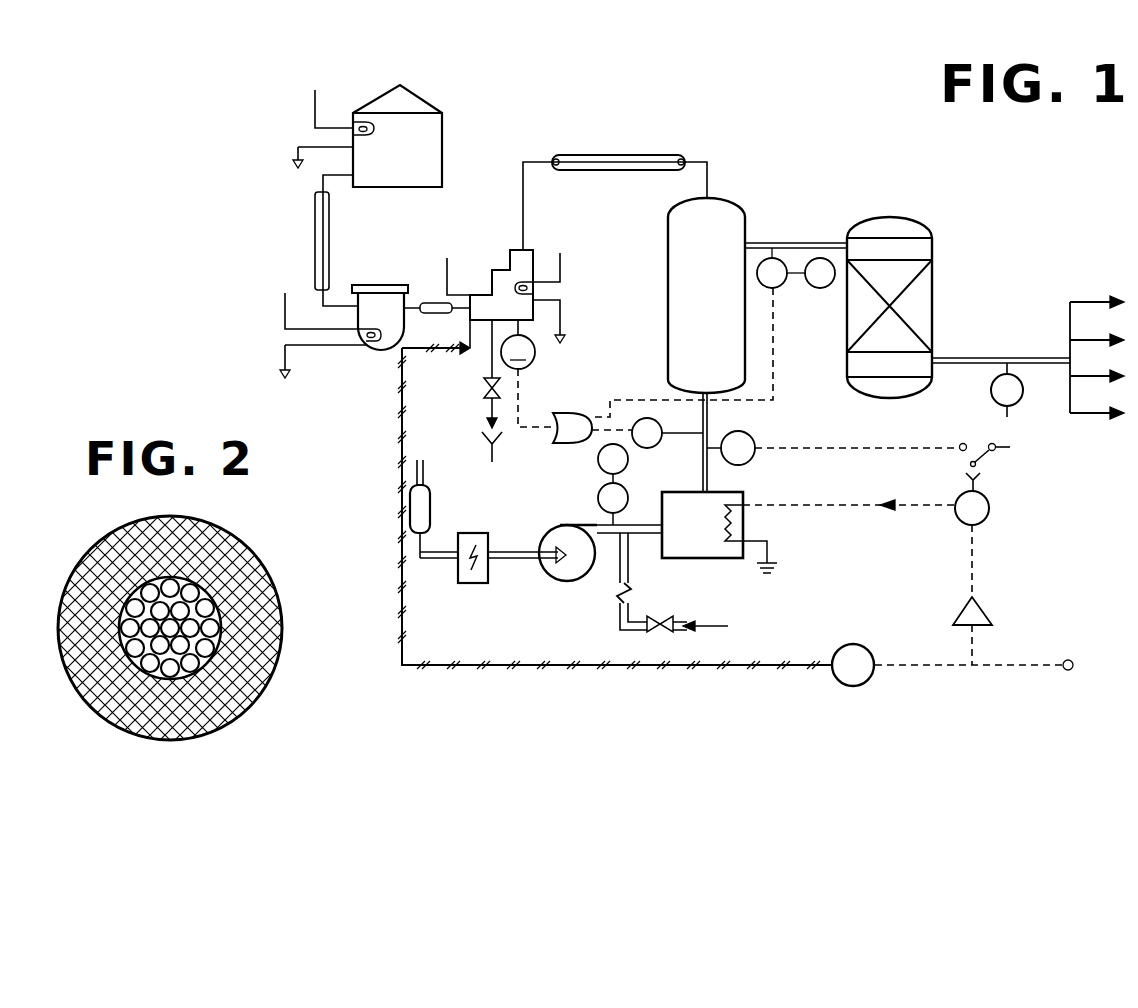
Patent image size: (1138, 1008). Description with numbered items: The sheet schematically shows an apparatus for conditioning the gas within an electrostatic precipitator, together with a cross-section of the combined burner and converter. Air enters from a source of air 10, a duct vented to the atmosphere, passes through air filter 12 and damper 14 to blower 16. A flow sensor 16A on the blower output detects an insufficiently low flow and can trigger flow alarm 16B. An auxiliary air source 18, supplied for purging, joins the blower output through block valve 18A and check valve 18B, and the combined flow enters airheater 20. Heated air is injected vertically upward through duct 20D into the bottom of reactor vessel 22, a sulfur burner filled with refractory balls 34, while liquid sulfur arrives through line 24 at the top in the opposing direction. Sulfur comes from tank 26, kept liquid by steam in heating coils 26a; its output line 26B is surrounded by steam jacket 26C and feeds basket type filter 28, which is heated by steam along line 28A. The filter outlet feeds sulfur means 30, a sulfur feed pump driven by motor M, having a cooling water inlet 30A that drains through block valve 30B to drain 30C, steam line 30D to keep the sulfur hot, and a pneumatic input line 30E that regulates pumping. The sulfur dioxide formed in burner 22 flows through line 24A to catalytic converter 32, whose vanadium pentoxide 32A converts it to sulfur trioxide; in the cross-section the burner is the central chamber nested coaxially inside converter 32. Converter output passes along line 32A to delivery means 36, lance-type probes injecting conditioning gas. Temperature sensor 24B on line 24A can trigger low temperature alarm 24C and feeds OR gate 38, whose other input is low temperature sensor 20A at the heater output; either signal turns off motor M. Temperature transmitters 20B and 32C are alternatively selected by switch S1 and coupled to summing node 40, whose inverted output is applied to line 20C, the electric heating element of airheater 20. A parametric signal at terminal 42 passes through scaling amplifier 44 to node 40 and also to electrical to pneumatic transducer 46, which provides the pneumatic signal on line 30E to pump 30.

In FIG. 1, the source of air 10 is at (426, 470).
In FIG. 1, the air filter 12 is at (431, 514).
In FIG. 1, the damper 14 is at (470, 585).
In FIG. 1, the blower 16 is at (570, 524).
In FIG. 1, the flow sensor 16A is at (598, 496).
In FIG. 1, the flow alarm 16B is at (598, 459).
In FIG. 1, the auxiliary air source 18 is at (680, 618).
In FIG. 1, the block valve 18A is at (665, 634).
In FIG. 1, the check valve 18B is at (640, 596).
In FIG. 1, the airheater 20 is at (745, 498).
In FIG. 1, the low temperature sensor 20A is at (648, 448).
In FIG. 1, the temperature transmitter 20B is at (750, 436).
In FIG. 1, the line / electric heating element 20C is at (826, 505).
In FIG. 1, the duct 20D is at (712, 477).
In FIG. 1, the reactor vessel 22 is at (668, 342).
In FIG. 2, the reactor vessel 22 is at (215, 585).
In FIG. 1, the line 24 is at (707, 178).
In FIG. 1, the line 24A is at (837, 205).
In FIG. 1, the temperature sensor 24B is at (777, 288).
In FIG. 1, the low temperature alarm 24C is at (826, 288).
In FIG. 1, the tank 26 is at (442, 157).
In FIG. 1, the heating coils 26a is at (353, 122).
In FIG. 1, the output line 26B is at (323, 185).
In FIG. 1, the steam jacket 26C is at (329, 226).
In FIG. 1, the basket type filter 28 is at (360, 285).
In FIG. 1, the line 28A is at (285, 327).
In FIG. 1, the sulfur means 30 is at (523, 250).
In FIG. 1, the cooling water inlet 30A is at (447, 282).
In FIG. 1, the block valve 30B is at (484, 388).
In FIG. 1, the drain 30C is at (492, 462).
In FIG. 1, the line 30D is at (562, 275).
In FIG. 1, the line 30E is at (402, 450).
In FIG. 1, the catalytic converter 32 is at (932, 275).
In FIG. 2, the catalytic converter 32 is at (225, 668).
In FIG. 1, the line / vanadium pentoxide 32A is at (942, 358).
In FIG. 1, the temperature transmitter 32C is at (1004, 406).
In FIG. 2, the refractory balls 34 is at (216, 628).
In FIG. 1, the delivery means 36 is at (1085, 302).
In FIG. 1, the OR gate 38 is at (608, 380).
In FIG. 1, the summing node 40 is at (989, 510).
In FIG. 1, the terminal 42 is at (1073, 662).
In FIG. 1, the scaling amplifier 44 is at (993, 618).
In FIG. 1, the electrical to pneumatic transducer 46 is at (868, 650).
In FIG. 1, the switch S1 is at (988, 460).